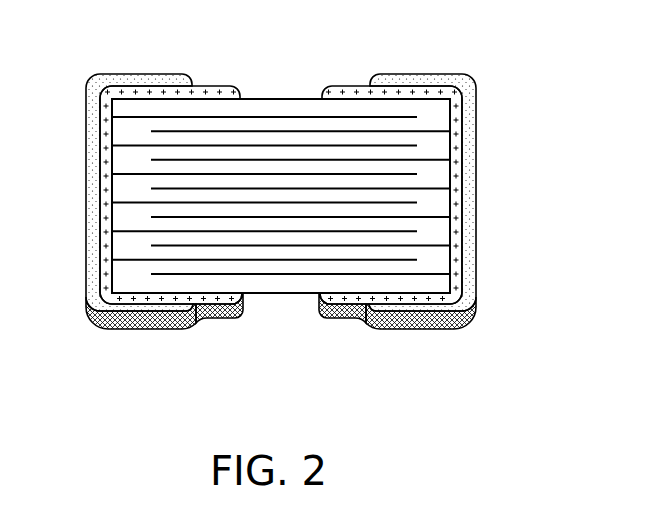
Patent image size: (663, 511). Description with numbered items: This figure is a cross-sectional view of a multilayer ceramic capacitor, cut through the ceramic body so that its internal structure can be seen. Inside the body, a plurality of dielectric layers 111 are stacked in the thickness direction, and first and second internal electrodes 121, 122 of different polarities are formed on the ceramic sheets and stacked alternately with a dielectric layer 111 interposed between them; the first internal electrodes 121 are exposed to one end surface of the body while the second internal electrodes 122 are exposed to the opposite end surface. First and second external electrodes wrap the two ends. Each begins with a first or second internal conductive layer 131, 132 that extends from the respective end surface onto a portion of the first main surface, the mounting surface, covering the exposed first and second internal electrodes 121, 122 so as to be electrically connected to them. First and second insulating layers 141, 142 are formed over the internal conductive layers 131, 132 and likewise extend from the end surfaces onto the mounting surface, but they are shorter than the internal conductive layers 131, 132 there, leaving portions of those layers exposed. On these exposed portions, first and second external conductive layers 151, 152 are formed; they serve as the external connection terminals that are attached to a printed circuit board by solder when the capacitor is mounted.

The dielectric layer 111 is at (440, 207).
The first internal electrode 121 is at (284, 115).
The second internal electrode 122 is at (365, 130).
The first internal conductive layer 131 is at (155, 88).
The second internal conductive layer 132 is at (452, 141).
The first insulating layer 141 is at (145, 331).
The second insulating layer 142 is at (437, 313).
The first external conductive layer 151 is at (200, 326).
The second external conductive layer 152 is at (360, 320).